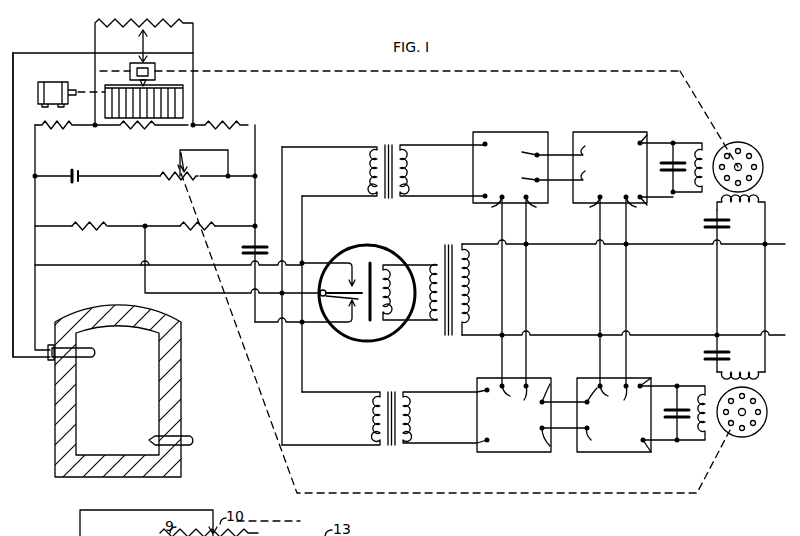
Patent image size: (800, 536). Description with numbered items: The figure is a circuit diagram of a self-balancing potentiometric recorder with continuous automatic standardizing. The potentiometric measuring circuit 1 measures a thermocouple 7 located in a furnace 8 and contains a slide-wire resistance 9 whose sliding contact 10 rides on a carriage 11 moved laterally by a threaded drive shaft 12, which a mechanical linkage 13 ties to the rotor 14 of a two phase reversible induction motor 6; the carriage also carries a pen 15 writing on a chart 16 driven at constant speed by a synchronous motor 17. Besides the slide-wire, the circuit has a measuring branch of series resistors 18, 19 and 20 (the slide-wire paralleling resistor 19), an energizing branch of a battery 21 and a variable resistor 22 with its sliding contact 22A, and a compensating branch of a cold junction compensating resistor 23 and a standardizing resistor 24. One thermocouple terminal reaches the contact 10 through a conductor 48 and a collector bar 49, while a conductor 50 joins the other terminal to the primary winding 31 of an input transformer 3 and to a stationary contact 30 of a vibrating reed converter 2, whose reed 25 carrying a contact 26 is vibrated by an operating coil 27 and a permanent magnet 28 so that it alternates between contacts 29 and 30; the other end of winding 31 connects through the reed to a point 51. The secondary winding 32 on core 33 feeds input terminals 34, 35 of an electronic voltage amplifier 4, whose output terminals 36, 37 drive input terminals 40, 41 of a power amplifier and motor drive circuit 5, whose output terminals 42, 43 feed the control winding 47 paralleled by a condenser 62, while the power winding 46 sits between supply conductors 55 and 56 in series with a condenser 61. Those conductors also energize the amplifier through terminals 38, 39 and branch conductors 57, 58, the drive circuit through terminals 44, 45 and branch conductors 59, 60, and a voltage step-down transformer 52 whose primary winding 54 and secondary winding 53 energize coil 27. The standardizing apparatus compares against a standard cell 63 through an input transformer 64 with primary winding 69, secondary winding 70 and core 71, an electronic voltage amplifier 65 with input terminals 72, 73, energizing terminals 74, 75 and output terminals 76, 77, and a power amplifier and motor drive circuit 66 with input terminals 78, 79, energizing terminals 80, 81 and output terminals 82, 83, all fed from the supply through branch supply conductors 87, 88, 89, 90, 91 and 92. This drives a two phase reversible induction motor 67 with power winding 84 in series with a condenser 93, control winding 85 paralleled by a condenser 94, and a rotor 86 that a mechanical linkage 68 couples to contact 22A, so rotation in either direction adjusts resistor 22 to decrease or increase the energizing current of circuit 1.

The potentiometric measuring circuit 1 is at (293, 128).
The vibrating reed converter 2 is at (411, 242).
The input transformer 3 is at (383, 147).
The electronic voltage amplifier 4 is at (507, 130).
The power amplifier and motor drive circuit 5 is at (604, 130).
The two phase reversible induction motor 6 is at (752, 137).
The thermocouple 7 is at (100, 353).
The furnace 8 is at (194, 388).
The slide-wire resistance 9 is at (173, 22).
The sliding contact 10 is at (145, 46).
The carriage 11 is at (156, 66).
The threaded drive shaft 12 is at (160, 72).
The mechanical linkage 13 is at (274, 69).
The rotor 14 is at (762, 154).
The pen 15 is at (150, 81).
The chart 16 is at (176, 106).
The synchronous motor 17 is at (55, 83).
The resistor 18 is at (45, 124).
The resistor 19 is at (147, 127).
The resistor 20 is at (219, 120).
The battery 21 is at (73, 172).
The variable resistor 22 is at (184, 180).
The sliding contact 22A is at (182, 168).
The thermocouple cold junction compensating resistor 23 is at (95, 223).
The standardizing resistor 24 is at (201, 223).
The vibrating reed 25 is at (320, 291).
The contact 26 is at (328, 301).
The operating coil 27 is at (385, 290).
The permanent magnet 28 is at (370, 262).
The stationary contact 29 is at (342, 323).
The stationary contact 30 is at (344, 264).
The primary winding 31 is at (372, 186).
The secondary winding 32 is at (405, 182).
The core 33 is at (389, 198).
The input terminal 34 is at (485, 144).
The input terminal 35 is at (485, 196).
The output terminal 36 is at (522, 152).
The output terminal 37 is at (522, 178).
The energizing terminal 38 is at (492, 207).
The energizing terminal 39 is at (534, 206).
The input terminal 40 is at (584, 151).
The input terminal 41 is at (584, 181).
The output terminal 42 is at (626, 136).
The output terminal 43 is at (651, 204).
The energizing terminal 44 is at (599, 206).
The energizing terminal 45 is at (626, 206).
The power winding 46 is at (735, 210).
The control winding 47 is at (694, 146).
The conductor 48 is at (19, 250).
The collector bar 49 is at (105, 53).
The conductor 50 is at (72, 267).
The point 51 is at (147, 223).
The voltage step-down transformer 52 is at (458, 315).
The secondary winding 53 is at (434, 326).
The primary winding 54 is at (466, 280).
The supply conductor 55 is at (565, 243).
The supply conductor 56 is at (552, 335).
The branch conductor 57 is at (501, 241).
The branch conductor 58 is at (527, 243).
The branch conductor 59 is at (598, 263).
The branch conductor 60 is at (627, 242).
The condenser 61 is at (703, 227).
The condenser 62 is at (673, 194).
The standard cell 63 is at (243, 251).
The input transformer 64 is at (384, 436).
The electronic voltage amplifier 65 is at (492, 456).
The power amplifier and motor drive circuit 66 is at (600, 456).
The two phase reversible induction motor 67 is at (753, 442).
The mechanical linkage 68 is at (547, 494).
The primary winding 69 is at (372, 421).
The secondary winding 70 is at (410, 420).
The core 71 is at (397, 391).
The input terminal 72 is at (484, 391).
The input terminal 73 is at (486, 441).
The energizing terminal 74 is at (503, 391).
The energizing terminal 75 is at (526, 404).
The output terminal 76 is at (549, 380).
The output terminal 77 is at (546, 441).
The input terminal 78 is at (586, 405).
The input terminal 79 is at (591, 432).
The energizing terminal 80 is at (606, 399).
The energizing terminal 81 is at (629, 406).
The output terminal 82 is at (634, 380).
The output terminal 83 is at (643, 452).
The power winding 84 is at (741, 366).
The control winding 85 is at (699, 430).
The rotor 86 is at (755, 426).
The branch supply conductor 87 is at (502, 356).
The branch supply conductor 88 is at (526, 354).
The branch supply conductor 89 is at (600, 356).
The branch supply conductor 90 is at (627, 333).
The branch supply conductor 91 is at (716, 334).
The branch supply conductor 92 is at (766, 325).
The condenser 93 is at (704, 353).
The condenser 94 is at (677, 400).